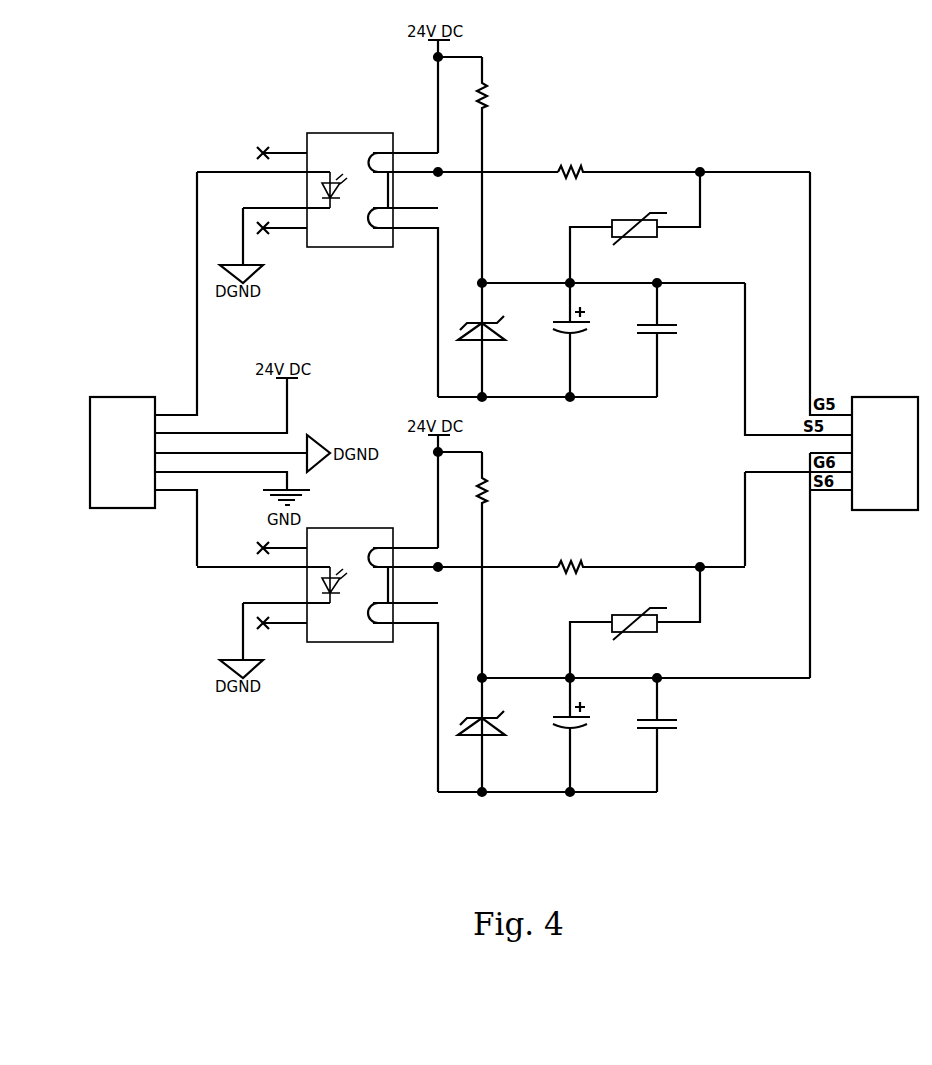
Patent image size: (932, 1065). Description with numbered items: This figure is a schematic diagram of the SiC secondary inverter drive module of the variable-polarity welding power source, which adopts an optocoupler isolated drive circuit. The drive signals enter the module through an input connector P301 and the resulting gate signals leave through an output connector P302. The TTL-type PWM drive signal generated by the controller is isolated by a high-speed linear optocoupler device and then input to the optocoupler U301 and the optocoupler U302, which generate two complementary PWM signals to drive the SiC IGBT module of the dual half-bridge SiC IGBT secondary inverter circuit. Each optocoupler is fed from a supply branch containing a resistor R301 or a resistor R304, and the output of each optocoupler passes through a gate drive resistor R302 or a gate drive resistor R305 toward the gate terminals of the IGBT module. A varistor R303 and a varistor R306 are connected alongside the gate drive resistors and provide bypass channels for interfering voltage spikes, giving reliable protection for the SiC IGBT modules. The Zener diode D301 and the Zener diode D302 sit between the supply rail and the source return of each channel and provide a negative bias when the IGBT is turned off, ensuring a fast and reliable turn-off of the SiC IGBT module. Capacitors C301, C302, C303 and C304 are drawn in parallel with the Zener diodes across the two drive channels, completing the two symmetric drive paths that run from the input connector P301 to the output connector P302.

The input connector P301 is at (121, 443).
The output connector P302 is at (883, 443).
The optocoupler U301 is at (377, 254).
The optocoupler U302 is at (377, 650).
The resistor R301 is at (502, 170).
The gate drive resistor R302 is at (678, 161).
The varistor R303 is at (635, 227).
The resistor R304 is at (502, 565).
The gate drive resistor R305 is at (646, 556).
The varistor R306 is at (635, 622).
The Zener diode D301 is at (502, 340).
The Zener diode D302 is at (502, 735).
The electrolytic capacitor C301 is at (593, 340).
The capacitor C302 is at (677, 340).
The electrolytic capacitor C303 is at (593, 735).
The capacitor C304 is at (677, 735).